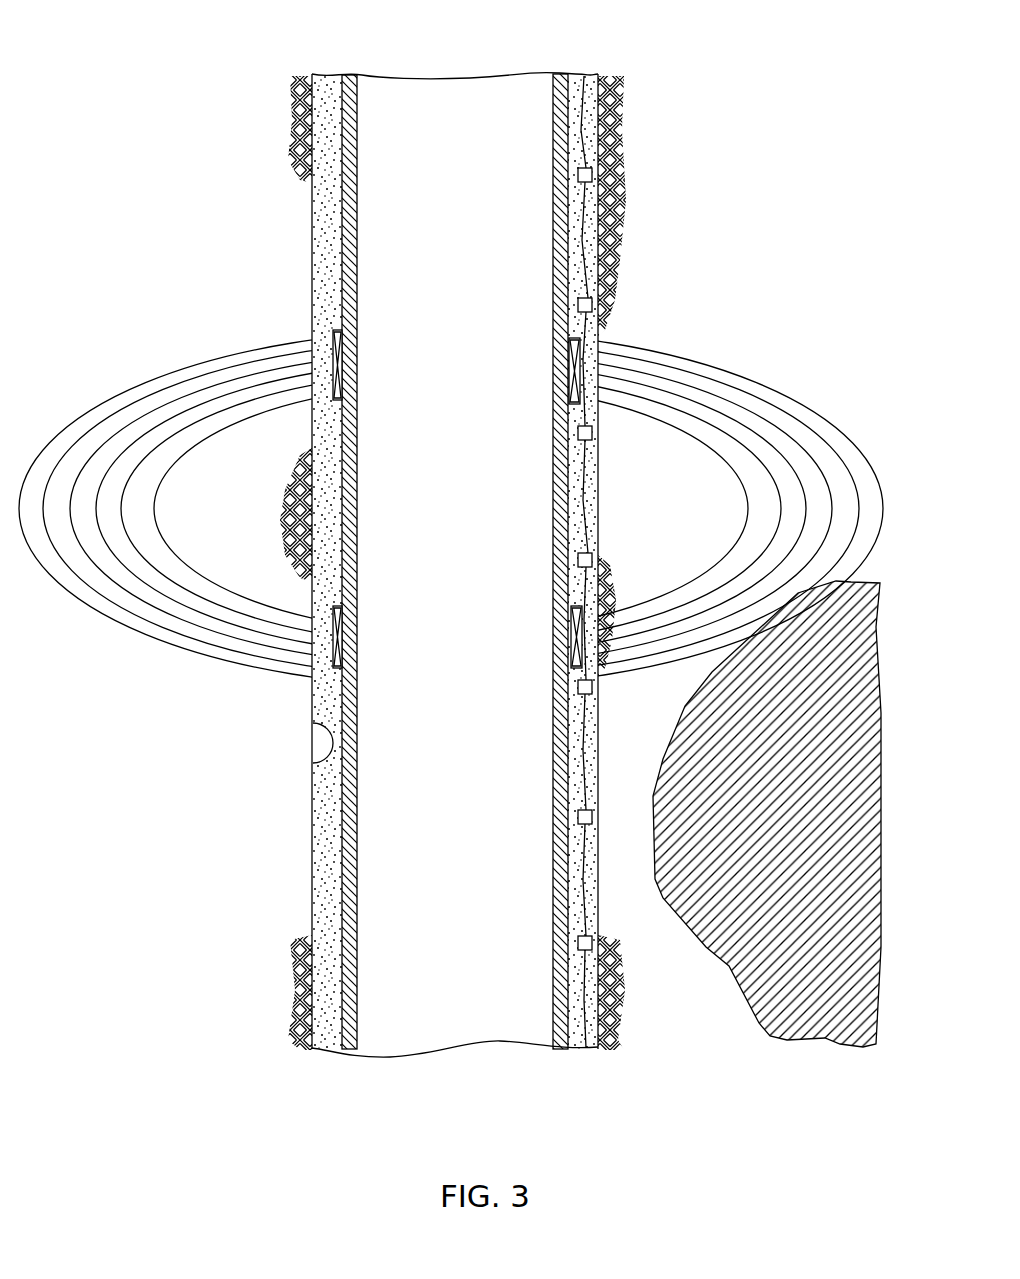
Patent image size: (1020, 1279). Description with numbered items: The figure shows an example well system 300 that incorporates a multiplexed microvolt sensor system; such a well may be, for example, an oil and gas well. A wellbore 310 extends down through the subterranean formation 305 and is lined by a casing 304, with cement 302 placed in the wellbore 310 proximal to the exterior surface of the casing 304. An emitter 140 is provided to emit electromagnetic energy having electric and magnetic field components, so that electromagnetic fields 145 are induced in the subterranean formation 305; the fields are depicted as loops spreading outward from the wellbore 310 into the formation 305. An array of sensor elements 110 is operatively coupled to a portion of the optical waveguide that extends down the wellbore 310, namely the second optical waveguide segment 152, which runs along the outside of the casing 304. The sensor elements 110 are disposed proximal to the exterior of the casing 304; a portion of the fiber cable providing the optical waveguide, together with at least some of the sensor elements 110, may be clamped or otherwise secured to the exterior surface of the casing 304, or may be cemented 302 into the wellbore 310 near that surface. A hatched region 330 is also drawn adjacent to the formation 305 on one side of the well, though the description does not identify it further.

The well system 300 is at (172, 27).
The cement 302 is at (312, 206).
The casing 304 is at (342, 250).
The subterranean formation 305 is at (868, 365).
The electromagnetic fields 145 is at (160, 376).
The emitter 140 is at (332, 328).
The second optical waveguide segment 152 is at (592, 236).
The sensor elements 110 is at (600, 176).
The wellbore 310 is at (312, 760).
The rock fragment 330 is at (811, 837).